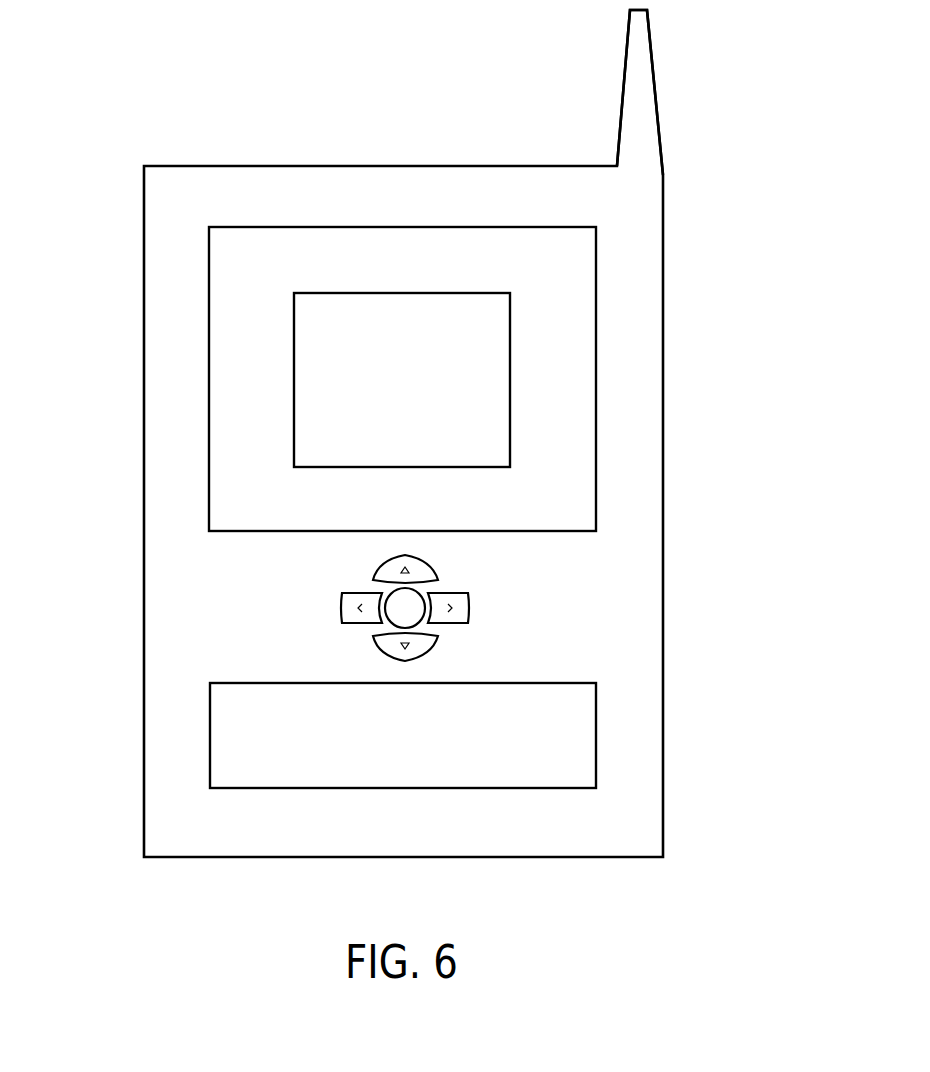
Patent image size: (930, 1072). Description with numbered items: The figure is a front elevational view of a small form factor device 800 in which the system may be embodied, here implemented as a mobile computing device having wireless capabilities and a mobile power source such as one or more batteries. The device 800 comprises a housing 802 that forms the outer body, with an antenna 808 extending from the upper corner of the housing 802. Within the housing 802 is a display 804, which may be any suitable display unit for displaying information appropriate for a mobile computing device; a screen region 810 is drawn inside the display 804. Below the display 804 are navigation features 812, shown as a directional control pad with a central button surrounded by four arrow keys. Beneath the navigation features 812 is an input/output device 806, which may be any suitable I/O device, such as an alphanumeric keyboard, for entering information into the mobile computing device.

The small form factor device 800 is at (146, 110).
The housing 802 is at (144, 598).
The display 804 is at (597, 283).
The input/output (I/O) device 806 is at (597, 734).
The antenna 808 is at (624, 88).
The display screen 810 is at (402, 293).
The navigation features 812 is at (500, 609).